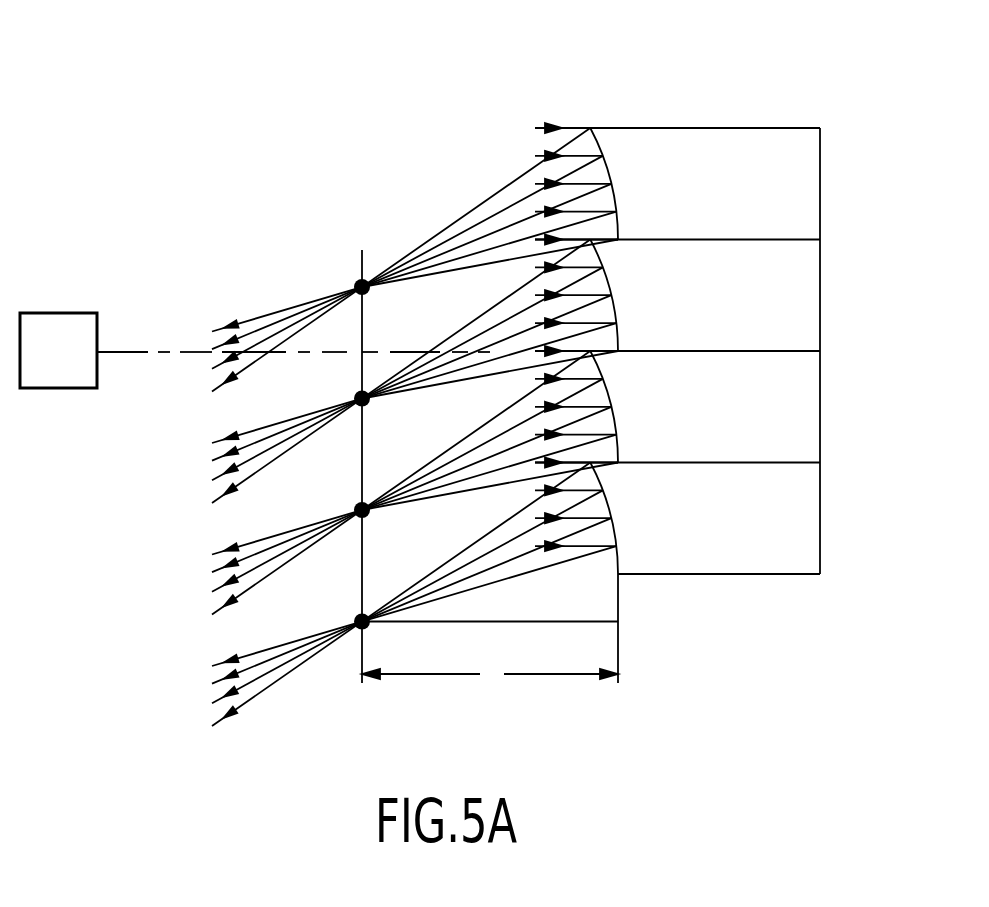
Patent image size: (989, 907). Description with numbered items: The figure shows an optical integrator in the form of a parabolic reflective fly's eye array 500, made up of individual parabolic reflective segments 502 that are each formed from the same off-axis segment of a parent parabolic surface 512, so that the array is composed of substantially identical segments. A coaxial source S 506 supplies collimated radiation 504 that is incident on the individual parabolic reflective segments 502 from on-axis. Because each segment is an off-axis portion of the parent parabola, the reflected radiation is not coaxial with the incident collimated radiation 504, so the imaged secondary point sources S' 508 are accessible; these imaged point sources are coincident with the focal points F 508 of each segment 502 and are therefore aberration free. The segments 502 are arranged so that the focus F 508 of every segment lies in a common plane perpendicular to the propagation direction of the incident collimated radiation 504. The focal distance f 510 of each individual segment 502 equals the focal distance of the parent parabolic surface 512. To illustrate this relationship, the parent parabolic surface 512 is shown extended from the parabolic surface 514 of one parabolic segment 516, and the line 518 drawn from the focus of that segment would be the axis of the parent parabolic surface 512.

The parabolic reflective fly's eye array 500 is at (853, 92).
The parabolic reflective segment 502 is at (695, 128).
The collimated radiation 504 is at (545, 128).
The coaxial source S 506 is at (50, 313).
The imaged secondary point source S' 508 is at (355, 285).
The focal distance f 510 is at (567, 674).
The parent parabolic surface 512 is at (618, 602).
The parabolic surface 514 is at (618, 528).
The parabolic segment 516 is at (813, 508).
The line 518 is at (478, 616).